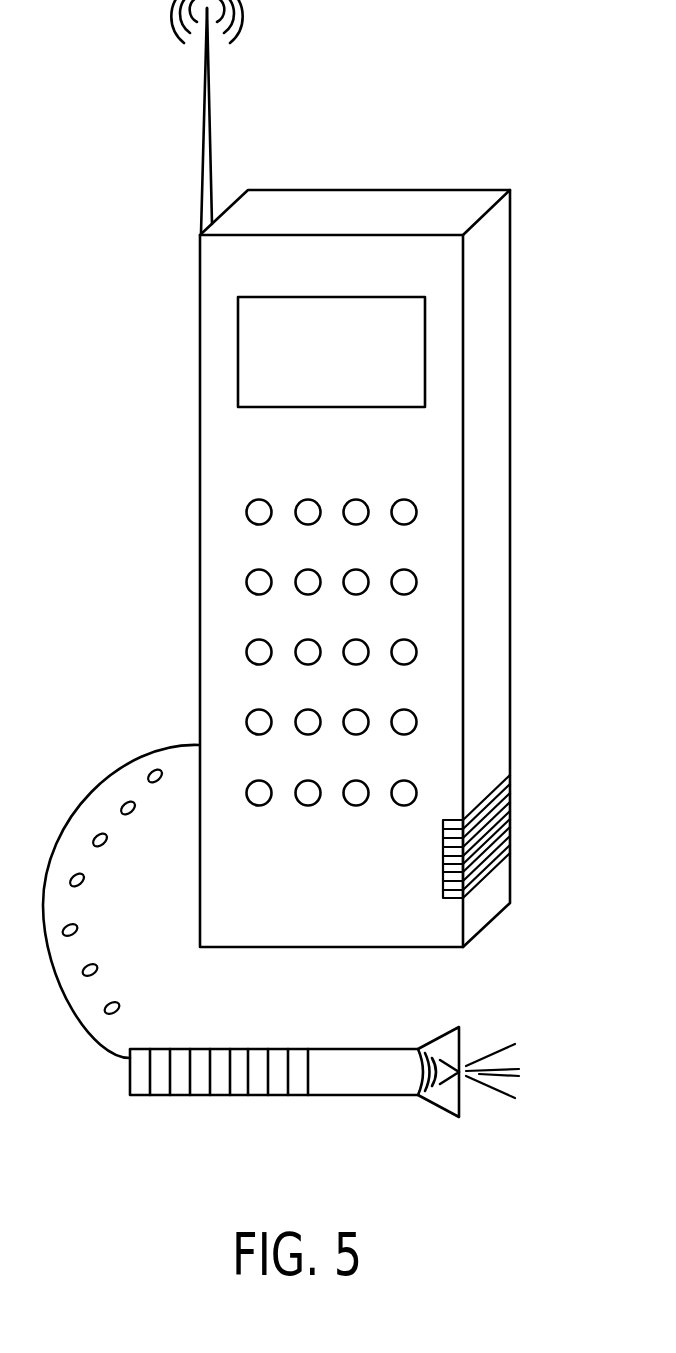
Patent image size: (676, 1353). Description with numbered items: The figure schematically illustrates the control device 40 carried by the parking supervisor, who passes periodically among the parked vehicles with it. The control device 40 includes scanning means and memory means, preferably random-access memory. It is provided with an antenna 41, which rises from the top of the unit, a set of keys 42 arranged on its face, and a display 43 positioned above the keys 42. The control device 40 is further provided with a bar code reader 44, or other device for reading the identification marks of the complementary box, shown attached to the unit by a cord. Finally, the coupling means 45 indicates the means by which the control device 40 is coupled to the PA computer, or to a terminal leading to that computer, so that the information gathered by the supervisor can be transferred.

The control device 40 is at (510, 493).
The antenna 41 is at (213, 153).
The keys 42 is at (417, 652).
The display 43 is at (425, 340).
The bar code reader 44 is at (358, 1096).
The coupling means 45 is at (490, 832).